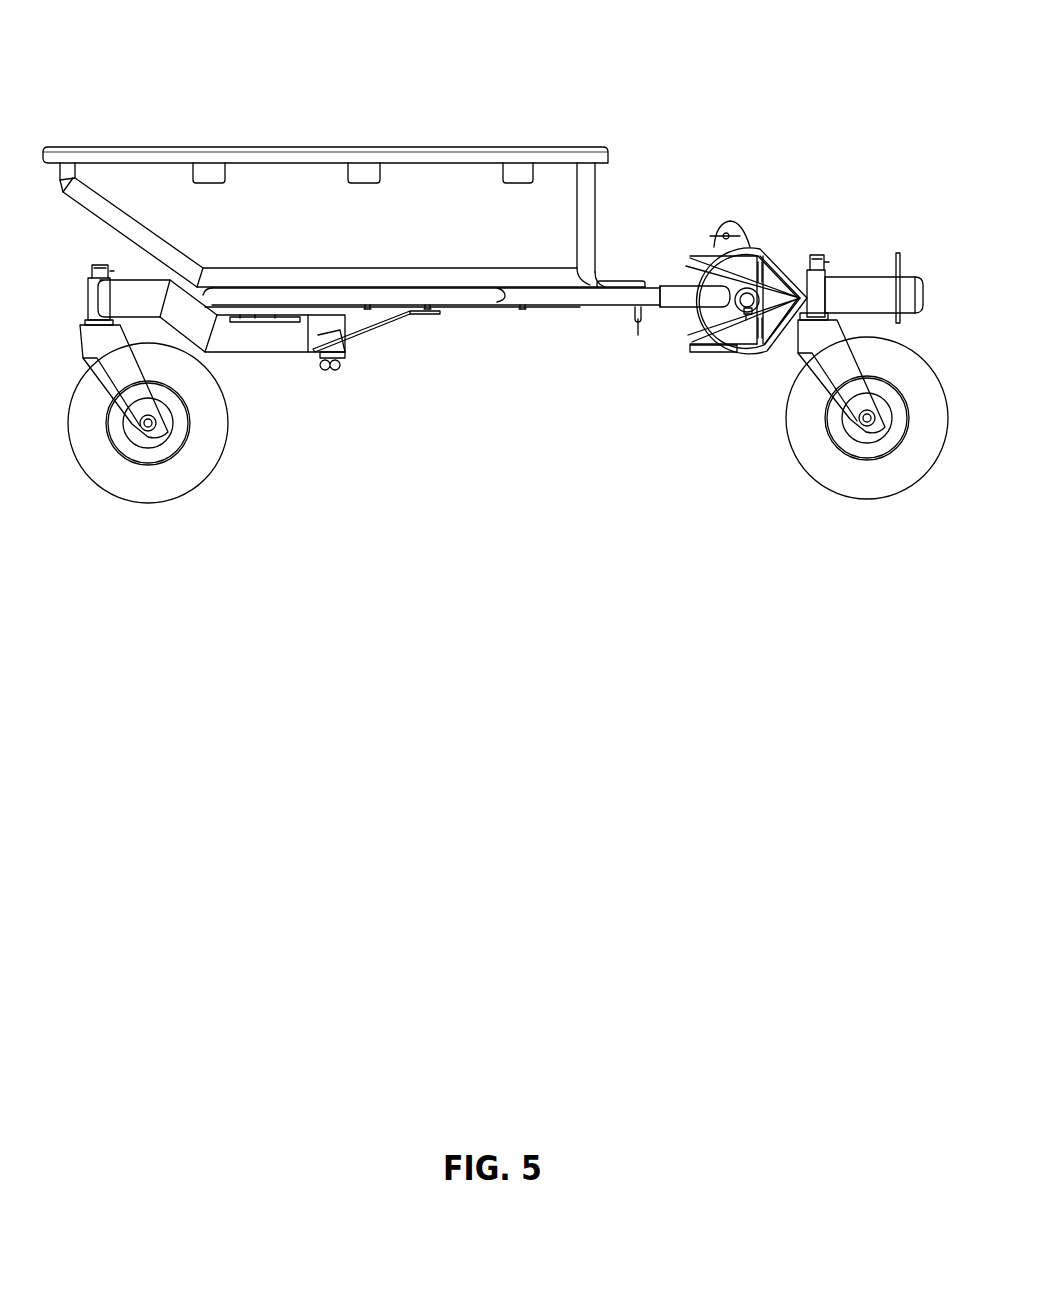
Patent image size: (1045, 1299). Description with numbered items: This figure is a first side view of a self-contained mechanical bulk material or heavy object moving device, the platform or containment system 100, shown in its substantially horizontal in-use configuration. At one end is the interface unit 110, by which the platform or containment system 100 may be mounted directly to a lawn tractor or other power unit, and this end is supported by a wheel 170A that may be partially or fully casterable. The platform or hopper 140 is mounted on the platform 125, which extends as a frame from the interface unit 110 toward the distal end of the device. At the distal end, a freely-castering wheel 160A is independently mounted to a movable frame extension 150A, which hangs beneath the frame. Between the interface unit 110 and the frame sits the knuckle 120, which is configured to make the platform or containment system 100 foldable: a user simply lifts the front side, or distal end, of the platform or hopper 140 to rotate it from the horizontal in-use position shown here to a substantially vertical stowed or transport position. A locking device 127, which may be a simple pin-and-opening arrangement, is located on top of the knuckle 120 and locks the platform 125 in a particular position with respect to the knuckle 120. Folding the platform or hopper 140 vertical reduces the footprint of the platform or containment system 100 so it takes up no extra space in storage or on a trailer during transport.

The platform or containment system 100 is at (74, 36).
The interface unit 110 is at (863, 288).
The knuckle 120 is at (700, 352).
The platform 125 is at (497, 305).
The locking device 127 is at (729, 225).
The platform or hopper 140 is at (344, 217).
The movable frame extension 150A is at (267, 340).
The freely-castering wheel 160A is at (207, 462).
The wheel 170A is at (808, 457).